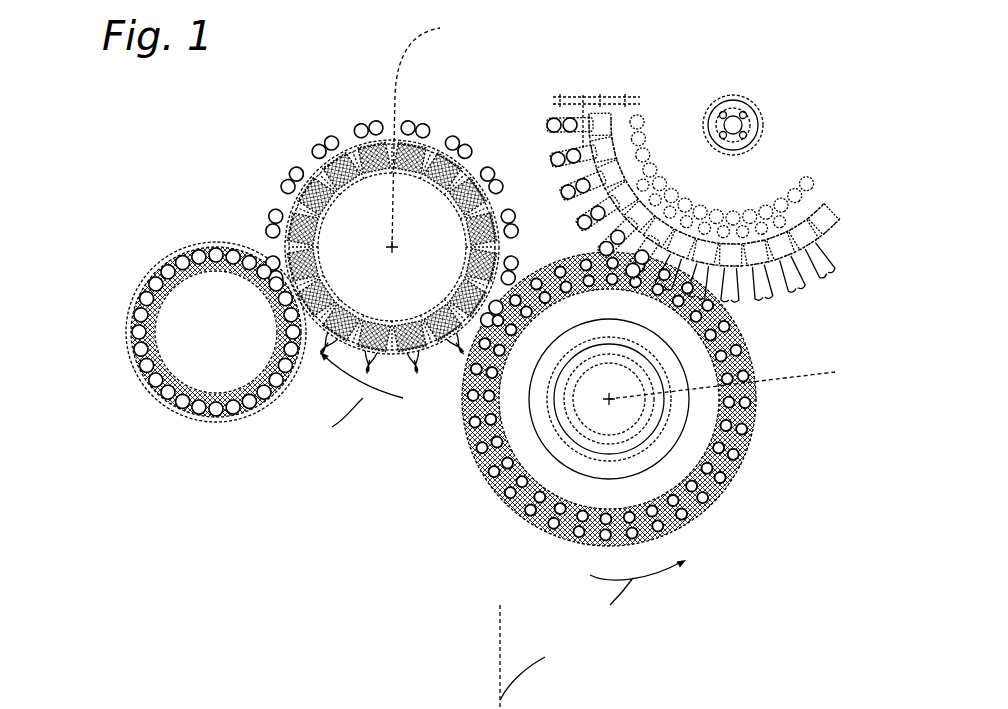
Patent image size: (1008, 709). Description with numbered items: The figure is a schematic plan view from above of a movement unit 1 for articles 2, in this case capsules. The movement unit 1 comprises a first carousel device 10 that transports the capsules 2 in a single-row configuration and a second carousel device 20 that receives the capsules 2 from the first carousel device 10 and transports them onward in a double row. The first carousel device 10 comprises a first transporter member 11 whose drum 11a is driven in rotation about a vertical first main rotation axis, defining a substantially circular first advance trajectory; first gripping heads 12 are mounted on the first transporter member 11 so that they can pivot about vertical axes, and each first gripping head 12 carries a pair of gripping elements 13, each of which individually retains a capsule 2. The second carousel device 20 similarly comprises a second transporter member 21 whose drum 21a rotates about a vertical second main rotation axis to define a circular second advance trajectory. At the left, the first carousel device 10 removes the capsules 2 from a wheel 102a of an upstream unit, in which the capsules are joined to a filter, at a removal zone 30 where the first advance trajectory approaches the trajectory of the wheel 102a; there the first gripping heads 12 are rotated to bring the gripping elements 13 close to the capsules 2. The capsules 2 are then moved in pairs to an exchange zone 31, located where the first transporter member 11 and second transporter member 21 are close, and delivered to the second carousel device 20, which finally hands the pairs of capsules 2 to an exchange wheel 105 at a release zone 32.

The movement unit 1 is at (410, 453).
The articles 2 is at (320, 146).
The first carousel device 10 is at (308, 162).
The first transporter member 11 is at (437, 138).
The drum 11a is at (400, 178).
The first gripping heads 12 is at (300, 204).
The gripping elements 13 is at (432, 363).
The second carousel device 20 is at (757, 463).
The second transporter member 21 is at (712, 420).
The drum 21a is at (542, 467).
The removal zone 30 is at (261, 245).
The exchange zone 31 is at (527, 245).
The release zone 32 is at (752, 312).
The wheel 102a is at (118, 332).
The exchange wheel 105 is at (597, 92).